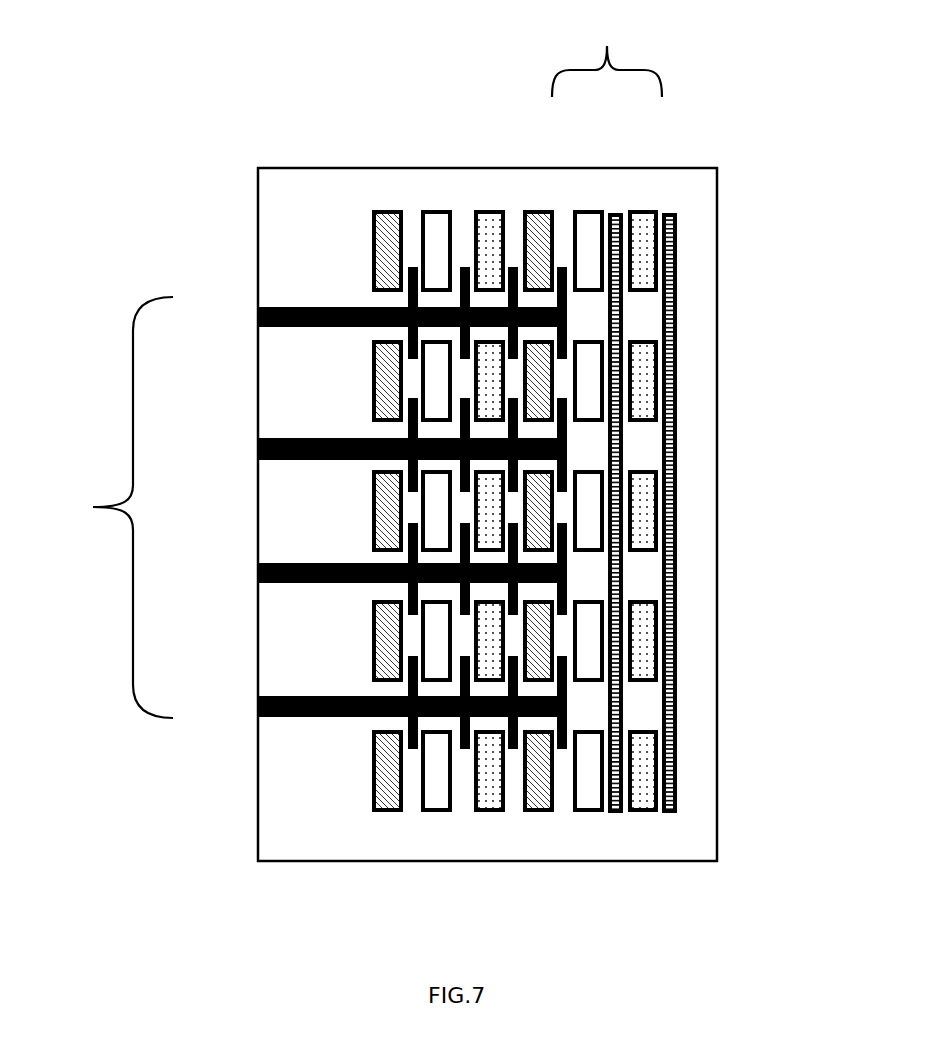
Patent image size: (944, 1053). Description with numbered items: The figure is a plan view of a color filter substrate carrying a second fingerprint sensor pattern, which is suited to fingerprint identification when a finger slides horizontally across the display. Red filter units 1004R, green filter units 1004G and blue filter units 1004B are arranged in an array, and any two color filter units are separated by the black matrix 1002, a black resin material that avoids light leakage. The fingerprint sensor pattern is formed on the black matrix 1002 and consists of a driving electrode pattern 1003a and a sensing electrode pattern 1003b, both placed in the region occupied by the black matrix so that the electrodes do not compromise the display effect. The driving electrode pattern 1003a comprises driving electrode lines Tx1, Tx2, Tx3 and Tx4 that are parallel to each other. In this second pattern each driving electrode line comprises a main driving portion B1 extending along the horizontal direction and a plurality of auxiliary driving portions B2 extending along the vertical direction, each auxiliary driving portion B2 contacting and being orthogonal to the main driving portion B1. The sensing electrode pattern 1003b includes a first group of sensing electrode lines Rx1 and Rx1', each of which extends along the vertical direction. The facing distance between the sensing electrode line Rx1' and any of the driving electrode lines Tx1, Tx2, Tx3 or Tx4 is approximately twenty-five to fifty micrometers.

The black matrix 1002 is at (675, 835).
The driving electrode pattern 1003a is at (109, 507).
The sensing electrode pattern 1003b is at (607, 55).
The red filter units 1004R is at (395, 240).
The green filter units 1004G is at (440, 243).
The blue filter units 1004B is at (493, 245).
The driving electrode line Tx1 is at (258, 314).
The driving electrode line Tx2 is at (258, 448).
The driving electrode line Tx3 is at (258, 573).
The driving electrode line Tx4 is at (258, 706).
The sensing electrode line Rx1 is at (592, 460).
The sensing electrode line Rx1' is at (645, 458).
The main driving portion B1 is at (302, 716).
The auxiliary driving portions B2 is at (463, 735).